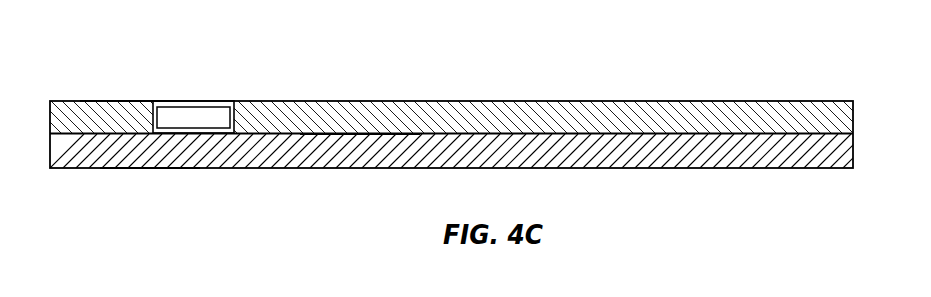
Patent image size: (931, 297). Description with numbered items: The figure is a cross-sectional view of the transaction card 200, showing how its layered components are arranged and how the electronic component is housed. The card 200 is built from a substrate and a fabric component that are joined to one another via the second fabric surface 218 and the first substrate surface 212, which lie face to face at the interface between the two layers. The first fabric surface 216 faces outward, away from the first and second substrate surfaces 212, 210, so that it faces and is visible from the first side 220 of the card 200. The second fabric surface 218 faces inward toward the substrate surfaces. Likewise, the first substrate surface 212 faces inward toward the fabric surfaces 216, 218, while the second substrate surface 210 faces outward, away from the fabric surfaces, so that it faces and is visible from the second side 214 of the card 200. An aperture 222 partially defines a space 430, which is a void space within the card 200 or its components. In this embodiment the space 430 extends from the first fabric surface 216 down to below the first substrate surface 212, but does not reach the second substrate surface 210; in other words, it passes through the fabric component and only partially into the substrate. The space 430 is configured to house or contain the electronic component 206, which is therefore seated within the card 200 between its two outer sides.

The card 200 is at (455, 66).
The electronic component 206 is at (193, 118).
The second substrate surface 210 is at (680, 168).
The first substrate surface 212 is at (360, 134).
The second side 214 is at (137, 183).
The first fabric surface 216 is at (787, 100).
The second fabric surface 218 is at (452, 131).
The first side 220 is at (123, 83).
The aperture 222 is at (192, 100).
The space 430 is at (216, 106).